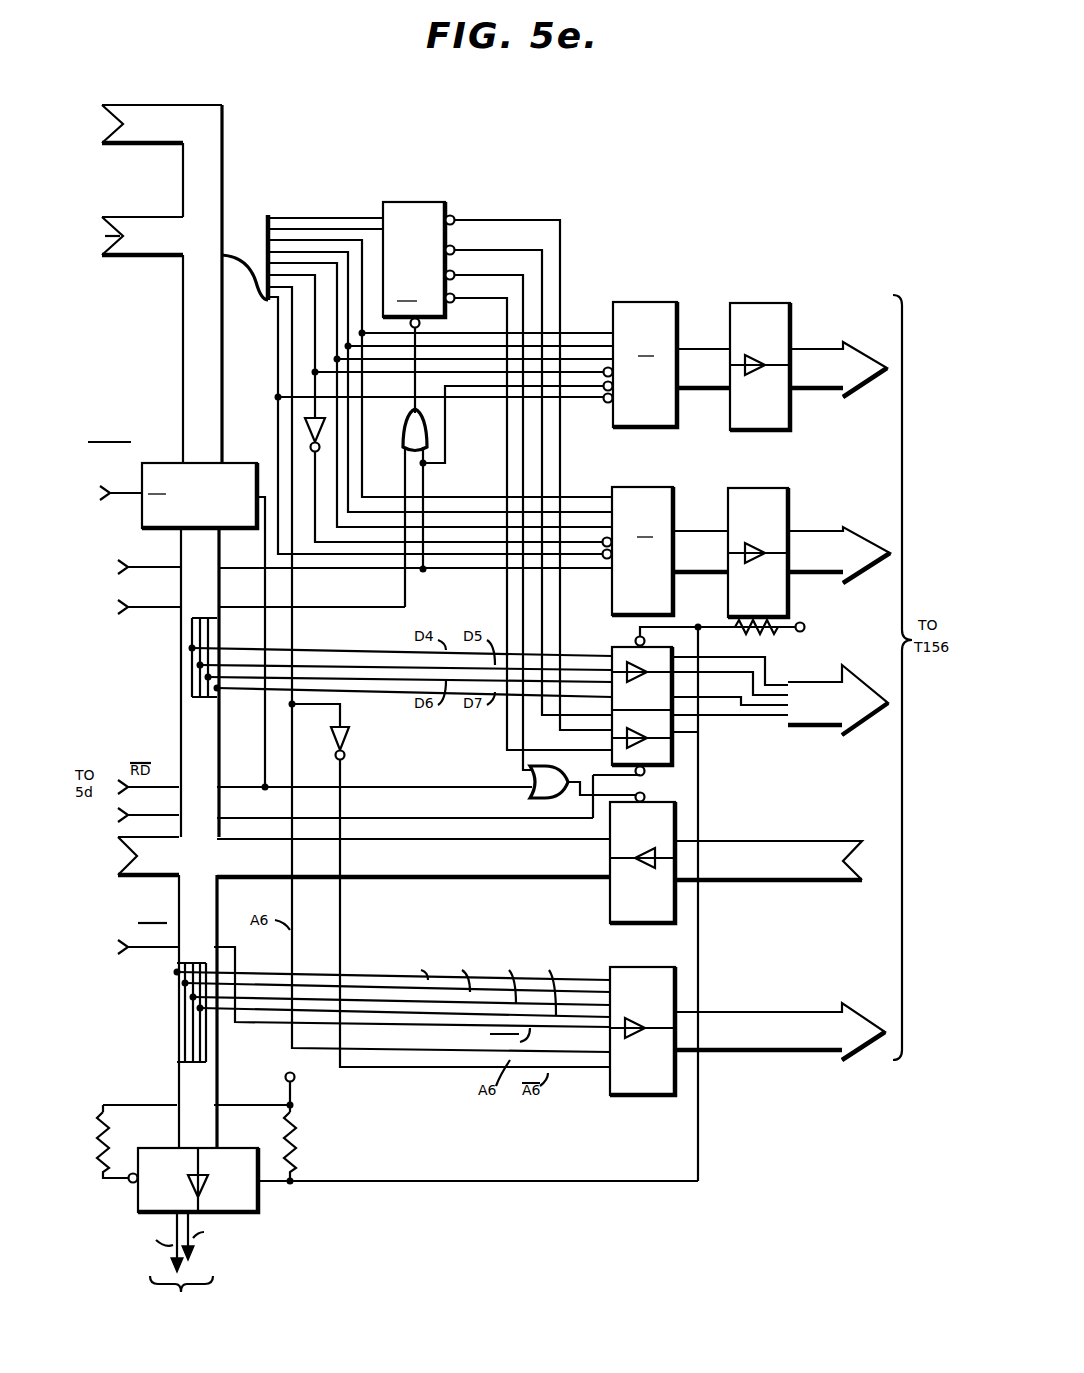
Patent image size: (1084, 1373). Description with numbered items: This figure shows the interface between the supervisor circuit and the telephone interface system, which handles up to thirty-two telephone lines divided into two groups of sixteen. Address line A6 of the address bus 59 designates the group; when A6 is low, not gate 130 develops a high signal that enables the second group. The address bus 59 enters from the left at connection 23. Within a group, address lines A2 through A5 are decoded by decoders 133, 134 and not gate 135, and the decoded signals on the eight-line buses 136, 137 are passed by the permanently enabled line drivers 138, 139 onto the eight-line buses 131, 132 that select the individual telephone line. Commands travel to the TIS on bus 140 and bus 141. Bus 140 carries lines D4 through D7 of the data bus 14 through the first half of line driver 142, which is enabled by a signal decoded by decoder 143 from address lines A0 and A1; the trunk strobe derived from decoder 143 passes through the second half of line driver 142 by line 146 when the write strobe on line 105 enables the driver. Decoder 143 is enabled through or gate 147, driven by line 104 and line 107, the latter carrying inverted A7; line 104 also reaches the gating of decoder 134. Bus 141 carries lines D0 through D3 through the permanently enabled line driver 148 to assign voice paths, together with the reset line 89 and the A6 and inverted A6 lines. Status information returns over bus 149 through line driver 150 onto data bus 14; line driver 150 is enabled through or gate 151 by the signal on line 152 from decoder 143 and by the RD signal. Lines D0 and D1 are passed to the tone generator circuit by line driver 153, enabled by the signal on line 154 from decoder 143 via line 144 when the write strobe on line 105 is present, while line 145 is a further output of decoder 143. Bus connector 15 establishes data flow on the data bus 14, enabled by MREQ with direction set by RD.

The data bus 14 is at (141, 125).
The address bus 59 is at (123, 240).
The bus connection 23 is at (126, 270).
The decoder 143 is at (416, 220).
The line 146 is at (488, 220).
The decoder output line 145 is at (488, 250).
The line 152 is at (488, 276).
The line 144 is at (461, 300).
The or gate 147 is at (433, 436).
The not gate 135 is at (304, 432).
The decoder 133 is at (668, 318).
The 8-line bus 136 is at (688, 356).
The line driver 138 is at (757, 315).
The 8-line bus 131 is at (854, 362).
The decoder 134 is at (666, 500).
The 8-line bus 137 is at (687, 540).
The line driver 139 is at (771, 505).
The 8-line bus 132 is at (806, 540).
The bus connector 15 is at (157, 470).
The line 104 is at (175, 567).
The address line 107 is at (170, 612).
The bus 140 is at (852, 686).
The line driver 142 is at (657, 758).
The or gate 151 is at (532, 797).
The line 105 is at (170, 815).
The not gate 130 is at (352, 736).
The line driver 150 is at (666, 826).
The bus 149 is at (752, 853).
The line 89 is at (146, 956).
The line driver 148 is at (664, 991).
The bus 141 is at (752, 1042).
The line driver 153 is at (258, 1200).
The line 154 is at (615, 1184).